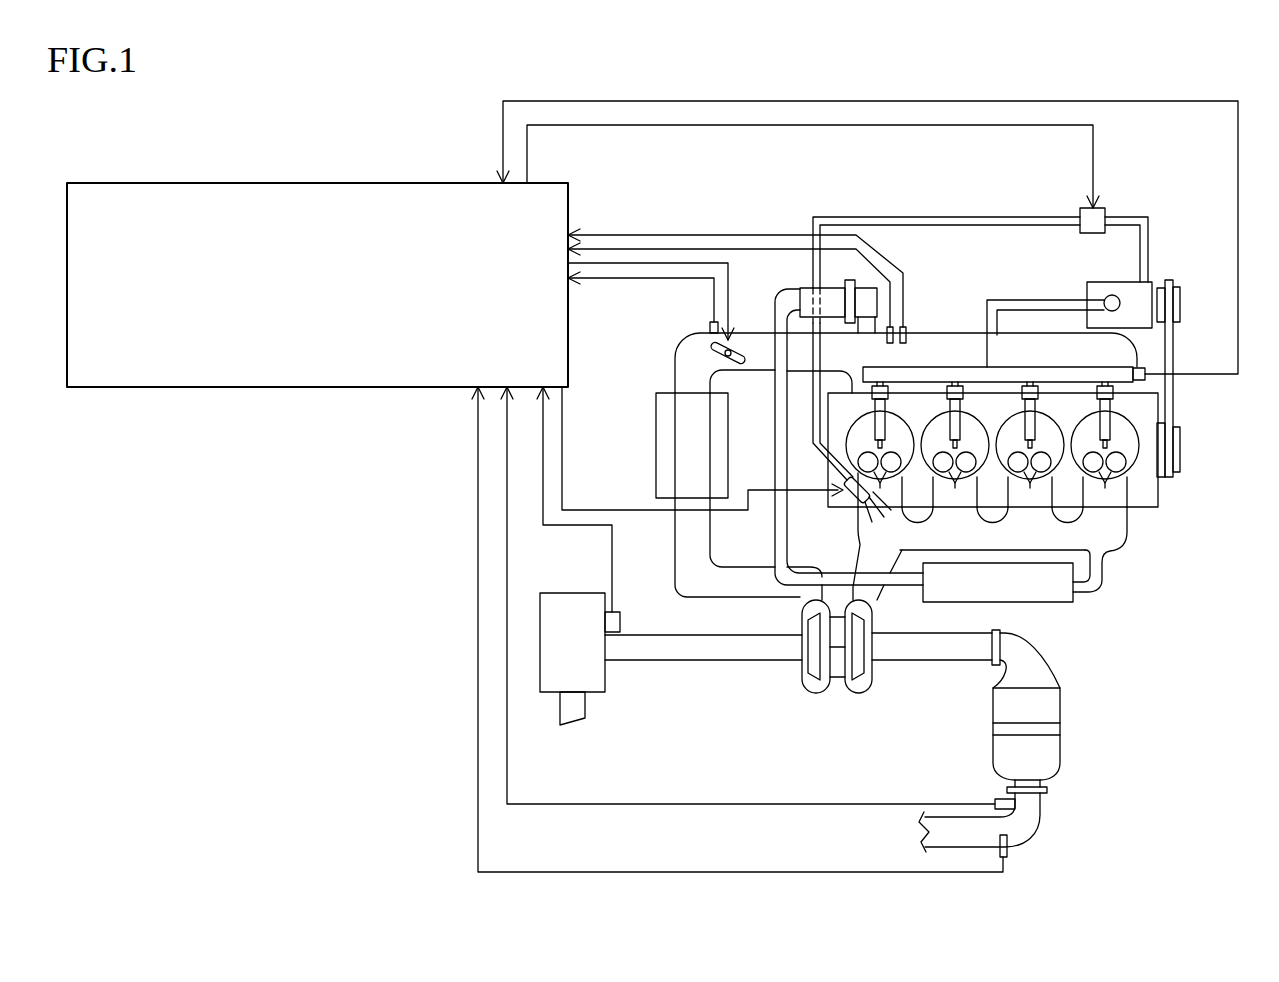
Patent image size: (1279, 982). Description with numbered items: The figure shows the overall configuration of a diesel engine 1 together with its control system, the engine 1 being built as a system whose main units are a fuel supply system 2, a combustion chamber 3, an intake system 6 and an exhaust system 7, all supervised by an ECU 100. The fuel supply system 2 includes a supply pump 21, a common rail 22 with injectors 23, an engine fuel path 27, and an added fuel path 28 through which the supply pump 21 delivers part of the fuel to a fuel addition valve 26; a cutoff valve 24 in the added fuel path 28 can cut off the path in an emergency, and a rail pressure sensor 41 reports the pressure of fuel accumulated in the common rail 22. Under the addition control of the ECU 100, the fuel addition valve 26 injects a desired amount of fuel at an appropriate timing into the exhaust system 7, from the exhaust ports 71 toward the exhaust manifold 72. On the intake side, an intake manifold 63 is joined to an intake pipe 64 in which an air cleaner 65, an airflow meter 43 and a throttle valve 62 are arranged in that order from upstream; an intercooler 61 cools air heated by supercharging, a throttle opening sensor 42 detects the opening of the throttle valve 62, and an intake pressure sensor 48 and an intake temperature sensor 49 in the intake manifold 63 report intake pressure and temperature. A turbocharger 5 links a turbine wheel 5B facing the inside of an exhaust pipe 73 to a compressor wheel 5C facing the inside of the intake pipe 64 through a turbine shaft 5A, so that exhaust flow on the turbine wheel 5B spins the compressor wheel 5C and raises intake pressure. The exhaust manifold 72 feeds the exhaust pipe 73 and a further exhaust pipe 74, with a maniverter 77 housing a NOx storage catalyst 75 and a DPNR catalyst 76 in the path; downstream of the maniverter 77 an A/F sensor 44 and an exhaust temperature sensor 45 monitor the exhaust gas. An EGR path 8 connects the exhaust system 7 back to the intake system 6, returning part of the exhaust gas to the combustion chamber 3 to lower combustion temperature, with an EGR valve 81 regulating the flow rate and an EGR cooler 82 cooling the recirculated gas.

The ECU 100 is at (212, 183).
The diesel engine 1 is at (1162, 503).
The fuel supply system 2 is at (1155, 280).
The combustion chamber 3 is at (1140, 450).
The turbocharger 5 is at (841, 689).
The turbine shaft 5A is at (840, 652).
The turbine wheel 5B is at (858, 693).
The compressor wheel 5C is at (808, 690).
The intake system 6 is at (945, 328).
The exhaust system 7 is at (1130, 530).
The EGR path 8 is at (1102, 577).
The supply pump 21 is at (1117, 282).
The common rail 22 is at (1137, 343).
The injectors 23 is at (1110, 405).
The cutoff valve 24 is at (1108, 208).
The fuel addition valve 26 is at (777, 507).
The engine fuel path 27 is at (1045, 300).
The added fuel path 28 is at (1012, 217).
The rail pressure sensor 41 is at (1147, 380).
The throttle opening sensor 42 is at (710, 325).
The airflow meter 43 is at (622, 630).
The A/F sensor 44 is at (1007, 853).
The exhaust temperature sensor 45 is at (995, 803).
The intake pressure sensor 48 is at (908, 345).
The intake temperature sensor 49 is at (887, 343).
The intercooler 61 is at (656, 433).
The throttle valve 62 is at (712, 346).
The intake manifold 63 is at (1175, 333).
The intake pipe 64 is at (675, 366).
The air cleaner 65 is at (558, 593).
The exhaust ports 71 is at (1087, 493).
The exhaust manifold 72 is at (862, 542).
The exhaust pipe 73 is at (947, 636).
The exhaust pipe 74 is at (1040, 820).
The NOx storage catalyst 75 is at (1060, 703).
The DPNR catalyst 76 is at (1060, 750).
The maniverter 77 is at (1089, 716).
The EGR valve 81 is at (825, 285).
The EGR cooler 82 is at (1035, 605).